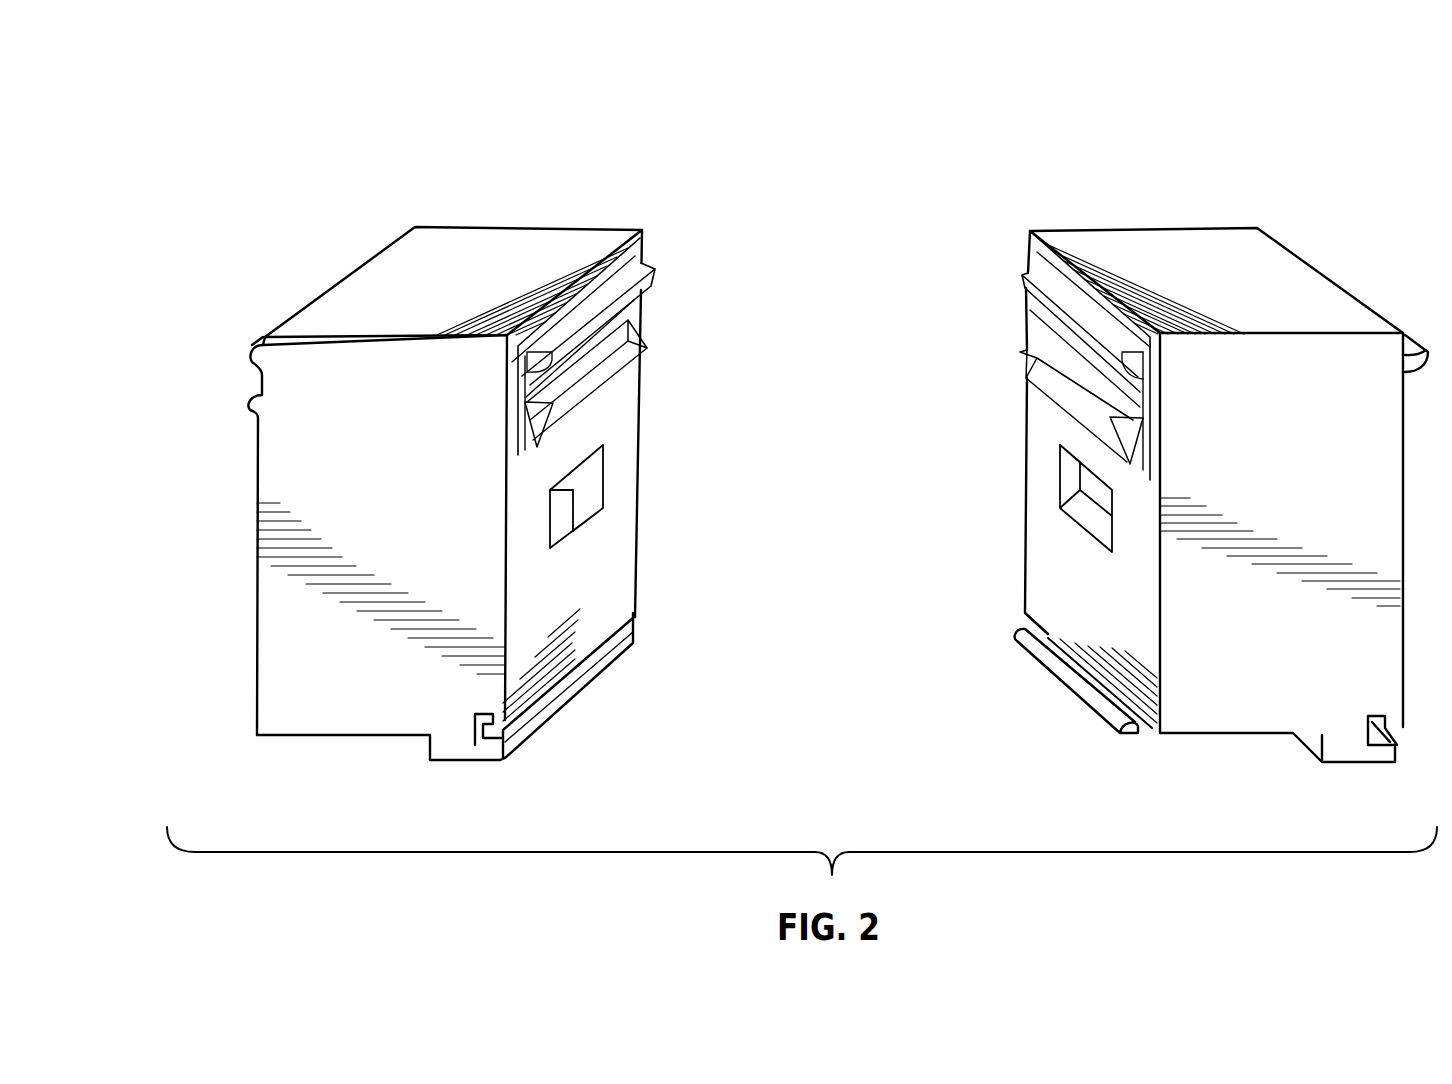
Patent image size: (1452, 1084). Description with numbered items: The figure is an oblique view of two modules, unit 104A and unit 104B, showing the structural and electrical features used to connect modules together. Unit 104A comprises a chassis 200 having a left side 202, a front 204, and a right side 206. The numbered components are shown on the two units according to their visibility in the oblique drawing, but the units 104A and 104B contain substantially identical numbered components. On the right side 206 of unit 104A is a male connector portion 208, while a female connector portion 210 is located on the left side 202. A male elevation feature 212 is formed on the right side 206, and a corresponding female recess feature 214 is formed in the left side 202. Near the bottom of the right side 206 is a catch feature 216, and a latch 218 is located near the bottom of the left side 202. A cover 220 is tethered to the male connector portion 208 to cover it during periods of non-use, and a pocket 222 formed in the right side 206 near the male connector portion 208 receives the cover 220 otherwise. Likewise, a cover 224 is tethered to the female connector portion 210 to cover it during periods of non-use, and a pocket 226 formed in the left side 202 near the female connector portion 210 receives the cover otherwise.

The unit 104A is at (547, 214).
The unit 104B is at (1156, 214).
The chassis 200 is at (258, 566).
The left side 202 is at (256, 688).
The front 204 is at (363, 694).
The right side 206 is at (548, 668).
The male connector portion 208 is at (650, 268).
The female connector portion 210 is at (257, 343).
The male elevation feature 212 is at (590, 495).
The female recess feature 214 is at (1086, 480).
The catch feature 216 is at (640, 622).
The latch 218 is at (1150, 738).
The cover 220 is at (650, 333).
The pocket 222 is at (520, 440).
The cover 224 is at (1024, 356).
The pocket 226 is at (1130, 466).